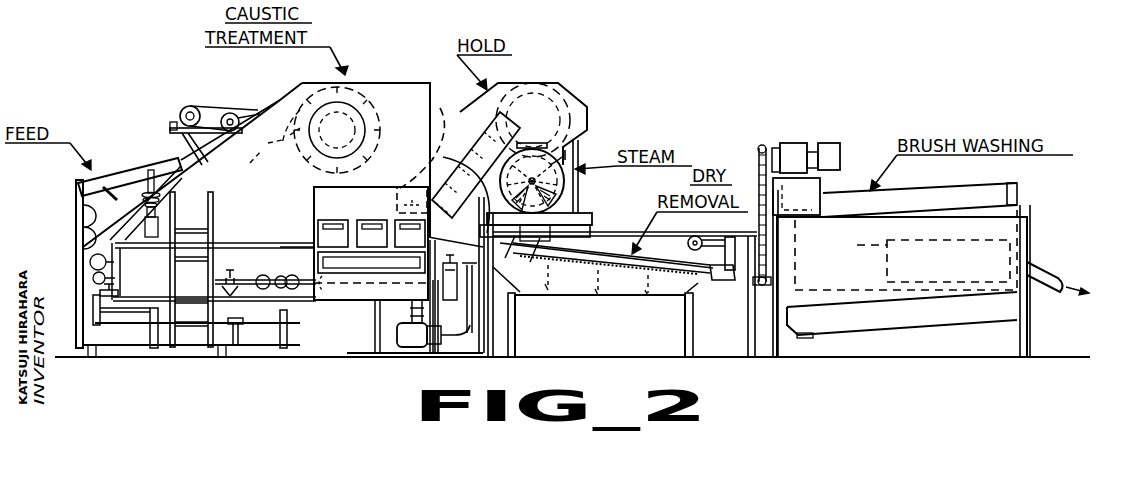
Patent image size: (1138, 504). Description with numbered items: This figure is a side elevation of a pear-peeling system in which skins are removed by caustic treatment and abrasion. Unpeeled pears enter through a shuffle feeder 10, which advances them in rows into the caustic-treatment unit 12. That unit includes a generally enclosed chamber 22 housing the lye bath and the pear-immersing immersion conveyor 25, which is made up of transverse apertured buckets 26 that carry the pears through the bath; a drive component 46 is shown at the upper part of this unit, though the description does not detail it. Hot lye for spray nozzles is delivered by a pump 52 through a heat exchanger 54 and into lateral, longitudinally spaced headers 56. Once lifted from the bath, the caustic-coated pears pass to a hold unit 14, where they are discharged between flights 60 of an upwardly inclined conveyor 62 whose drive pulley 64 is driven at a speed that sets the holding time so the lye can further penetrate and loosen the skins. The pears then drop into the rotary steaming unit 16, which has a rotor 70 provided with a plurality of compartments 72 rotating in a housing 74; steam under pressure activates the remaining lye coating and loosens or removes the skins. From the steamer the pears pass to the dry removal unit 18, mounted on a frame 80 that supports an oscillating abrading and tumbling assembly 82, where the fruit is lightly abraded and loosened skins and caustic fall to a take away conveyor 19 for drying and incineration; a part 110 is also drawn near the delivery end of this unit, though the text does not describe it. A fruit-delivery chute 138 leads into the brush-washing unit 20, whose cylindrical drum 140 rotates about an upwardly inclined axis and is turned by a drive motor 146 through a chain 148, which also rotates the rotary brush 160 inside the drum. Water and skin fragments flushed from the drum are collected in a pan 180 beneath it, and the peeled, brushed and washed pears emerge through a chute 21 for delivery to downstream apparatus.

The shuffle feeder 10 is at (135, 167).
The caustic-treatment unit 12 is at (275, 91).
The hold unit 14 is at (579, 94).
The rotary steaming unit 16 is at (488, 192).
The dry removal unit 18 is at (673, 277).
The take away conveyor 19 is at (541, 301).
The brush-washing unit 20 is at (1027, 193).
The chute 21 is at (1040, 275).
The chamber 22 is at (397, 83).
The immersion conveyor 25 is at (243, 167).
The apertured buckets 26 is at (256, 178).
The drive motor and belt 46 is at (206, 113).
The pump 52 is at (427, 340).
The heat exchanger 54 is at (238, 318).
The headers 56 is at (112, 296).
The flights 60 is at (470, 138).
The upwardly inclined conveyor 62 is at (467, 110).
The drive pulley 64 is at (523, 88).
The rotor 70 is at (557, 180).
The compartments 72 is at (566, 200).
The housing 74 is at (564, 158).
The frame 80 is at (750, 310).
The oscillating abrading and tumbling assembly 82 is at (594, 259).
The roller 110 is at (699, 240).
The fruit-delivery chute 138 is at (718, 280).
The cylindrical drum 140 is at (1000, 190).
The drive motor 146 is at (792, 150).
The chain 148 is at (760, 168).
The rotary brush 160 is at (906, 250).
The pan 180 is at (902, 326).